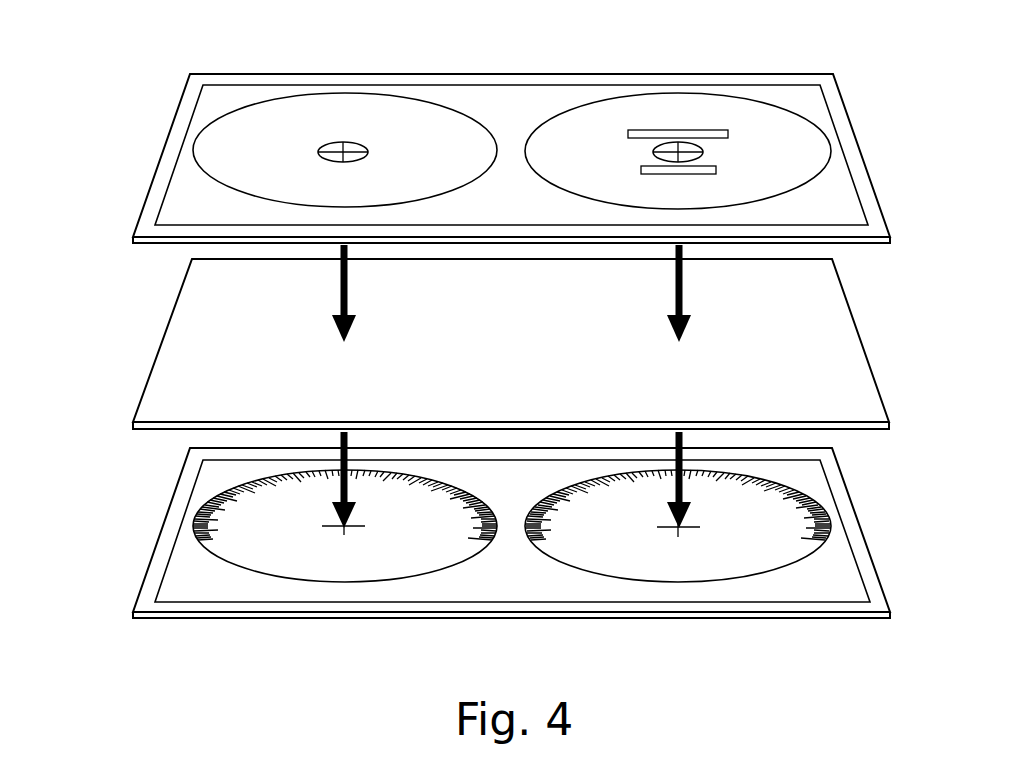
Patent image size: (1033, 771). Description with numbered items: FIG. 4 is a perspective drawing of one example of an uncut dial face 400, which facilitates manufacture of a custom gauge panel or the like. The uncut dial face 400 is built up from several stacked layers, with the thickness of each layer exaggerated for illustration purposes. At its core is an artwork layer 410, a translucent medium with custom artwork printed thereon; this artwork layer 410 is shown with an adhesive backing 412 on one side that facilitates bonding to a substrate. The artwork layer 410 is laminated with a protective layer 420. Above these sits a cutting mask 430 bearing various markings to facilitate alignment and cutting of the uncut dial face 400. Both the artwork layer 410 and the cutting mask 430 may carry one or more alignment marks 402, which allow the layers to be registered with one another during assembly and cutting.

The uncut dial face 400 is at (97, 56).
The alignment marks 402 is at (334, 148).
The artwork layer 410 is at (526, 553).
The adhesive backing 412 is at (613, 616).
The protective layer 420 is at (853, 316).
The cutting mask 430 is at (527, 158).